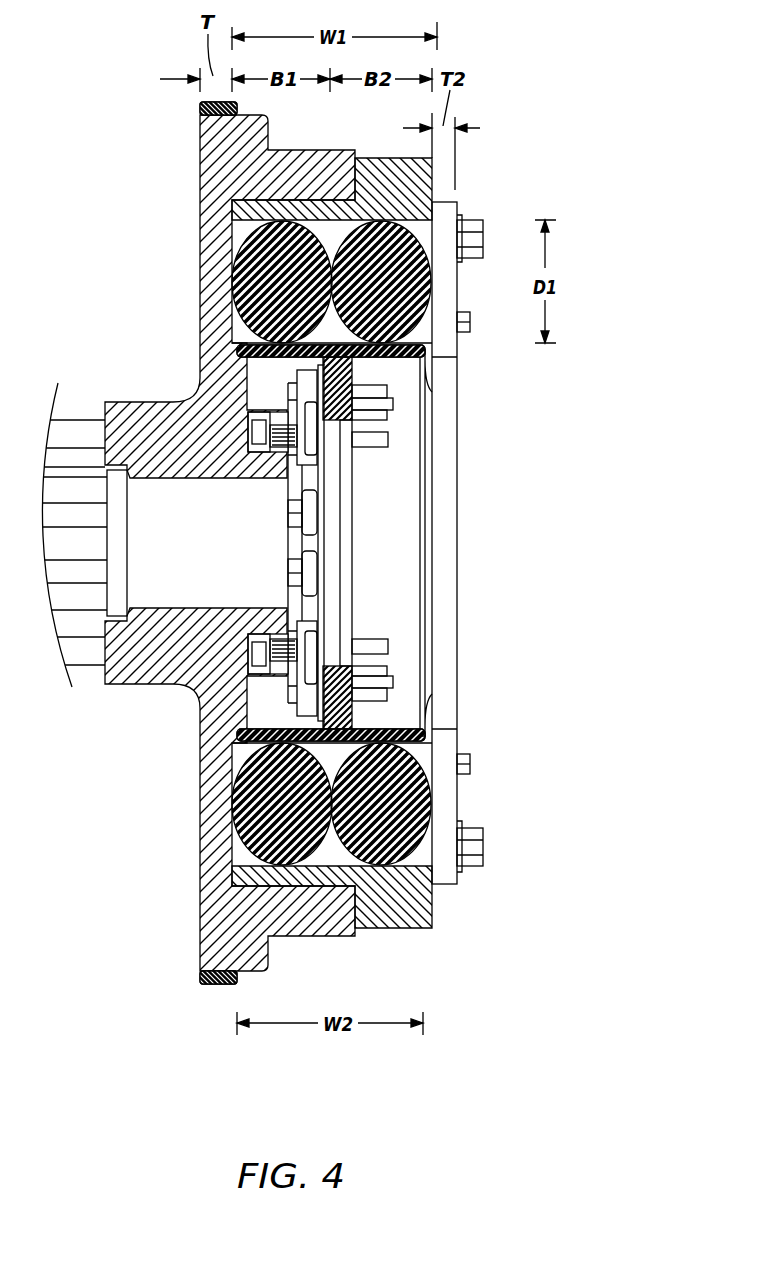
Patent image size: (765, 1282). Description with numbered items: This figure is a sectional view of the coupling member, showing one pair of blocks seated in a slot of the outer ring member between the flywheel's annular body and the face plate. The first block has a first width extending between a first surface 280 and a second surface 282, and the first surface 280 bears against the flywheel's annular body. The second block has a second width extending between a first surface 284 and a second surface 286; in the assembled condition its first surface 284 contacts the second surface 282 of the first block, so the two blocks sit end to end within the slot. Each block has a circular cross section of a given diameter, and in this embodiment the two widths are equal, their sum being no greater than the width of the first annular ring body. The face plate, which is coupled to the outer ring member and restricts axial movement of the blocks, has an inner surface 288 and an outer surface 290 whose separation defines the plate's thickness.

The first surface 280 is at (235, 298).
The second surface 282 is at (333, 303).
The first surface 284 is at (333, 238).
The second surface 286 is at (432, 258).
The inner surface 288 is at (423, 758).
The outer surface 290 is at (457, 797).